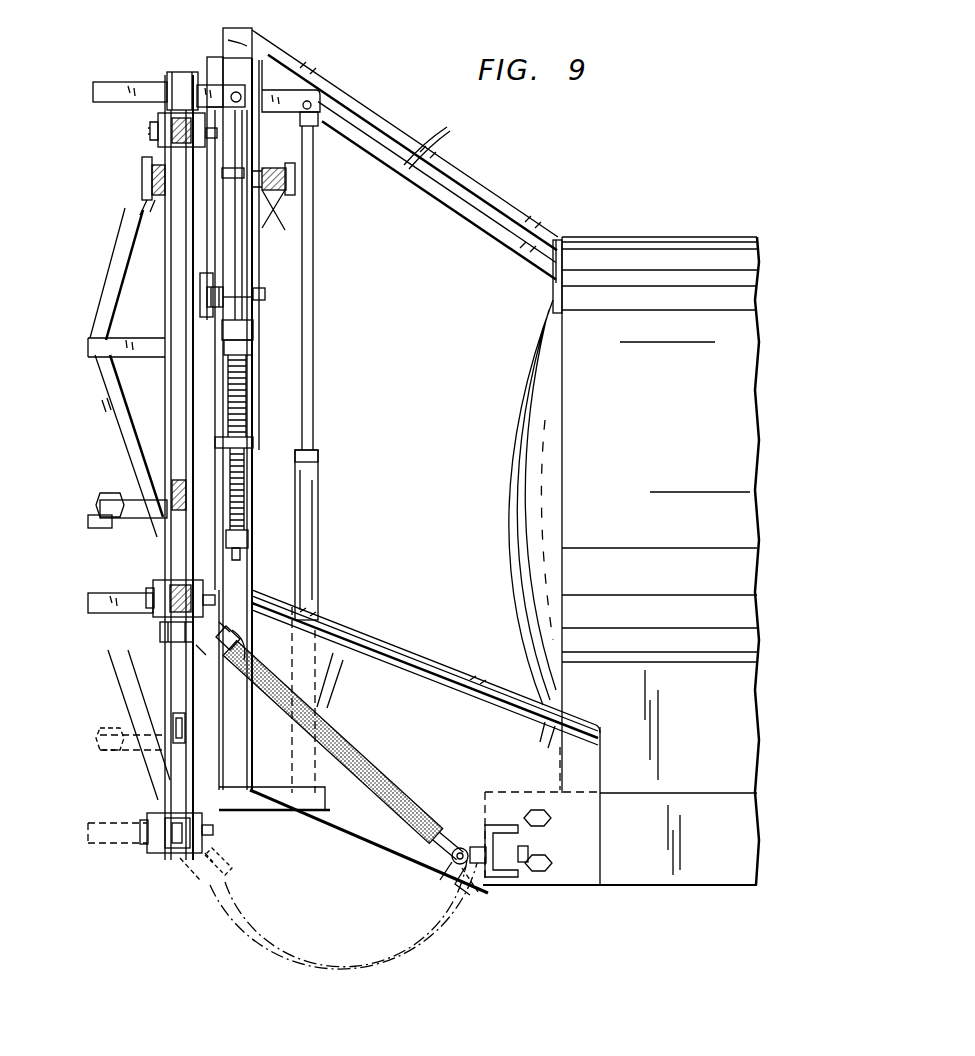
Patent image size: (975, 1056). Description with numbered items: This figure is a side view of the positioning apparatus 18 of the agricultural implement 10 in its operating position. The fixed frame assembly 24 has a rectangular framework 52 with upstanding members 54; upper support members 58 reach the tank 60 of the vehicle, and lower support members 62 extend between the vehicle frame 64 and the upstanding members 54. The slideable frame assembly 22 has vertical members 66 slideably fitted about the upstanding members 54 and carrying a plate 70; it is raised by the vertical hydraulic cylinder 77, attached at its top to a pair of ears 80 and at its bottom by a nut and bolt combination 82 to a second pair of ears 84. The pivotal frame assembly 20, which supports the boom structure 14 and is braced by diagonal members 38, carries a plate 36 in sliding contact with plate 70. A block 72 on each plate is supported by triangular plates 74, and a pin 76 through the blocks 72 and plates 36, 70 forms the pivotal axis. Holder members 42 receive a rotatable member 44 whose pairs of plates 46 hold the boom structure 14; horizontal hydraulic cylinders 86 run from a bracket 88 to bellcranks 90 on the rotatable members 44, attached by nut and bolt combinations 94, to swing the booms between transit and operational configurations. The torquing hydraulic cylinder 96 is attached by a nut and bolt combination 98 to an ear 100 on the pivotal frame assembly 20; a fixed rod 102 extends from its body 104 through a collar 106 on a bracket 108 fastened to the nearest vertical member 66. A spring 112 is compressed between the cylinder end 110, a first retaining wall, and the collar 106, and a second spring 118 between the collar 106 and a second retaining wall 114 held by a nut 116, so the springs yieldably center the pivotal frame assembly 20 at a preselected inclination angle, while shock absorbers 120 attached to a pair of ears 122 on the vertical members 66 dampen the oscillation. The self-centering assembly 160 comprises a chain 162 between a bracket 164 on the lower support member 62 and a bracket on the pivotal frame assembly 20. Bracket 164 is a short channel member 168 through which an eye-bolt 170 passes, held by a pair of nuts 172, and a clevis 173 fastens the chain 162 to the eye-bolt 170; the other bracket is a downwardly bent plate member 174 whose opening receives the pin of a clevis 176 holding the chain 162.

The agricultural implement 10 is at (542, 138).
The boom structure 14 is at (163, 480).
The positioning apparatus 18 is at (350, 72).
The pivotal frame assembly 20 is at (106, 268).
The slideable frame assembly 22 is at (274, 66).
The fixed frame assembly 24 is at (222, 34).
The plate 36 is at (200, 254).
The diagonal members 38 is at (118, 85).
The holder members 42 is at (170, 82).
The rotatable member 44 is at (166, 382).
The plates 46 is at (162, 118).
The rectangular framework 52 is at (232, 585).
The upstanding members 54 is at (240, 745).
The upper support members 58 is at (430, 142).
The tank 60 is at (662, 250).
The lower support members 62 is at (448, 700).
The frame 64 is at (656, 880).
The vertical members 66 is at (266, 60).
The plate 70 is at (221, 275).
The block 72 is at (152, 178).
The triangular plates 74 is at (143, 200).
The pin 76 is at (150, 165).
The hydraulic cylinder 77 is at (320, 500).
The pair of ears 80 is at (306, 103).
The nut and bolt combination 82 is at (311, 818).
The second pair of ears 84 is at (260, 812).
The horizontal hydraulic cylinders 86 is at (94, 503).
The bracket 88 is at (123, 540).
The bellcranks 90 is at (147, 500).
The nut and bolt combinations 94 is at (118, 522).
The torquing hydraulic cylinder 96 is at (241, 260).
The nut and bolt combination 98 is at (235, 92).
The ear 100 is at (224, 92).
The fixed rod 102 is at (239, 572).
The body 104 is at (254, 330).
The collar 106 is at (254, 440).
The bracket 108 is at (243, 382).
The end 110 is at (253, 350).
The spring 112 is at (249, 402).
The second retaining wall 114 is at (246, 532).
The nut 116 is at (243, 552).
The second spring 118 is at (246, 503).
The shock absorbers 120 is at (252, 133).
The pair of ears 122 is at (246, 287).
The assembly 160 is at (388, 735).
The chain 162 is at (445, 845).
The bracket 164 is at (506, 888).
The channel member 168 is at (498, 825).
The eye-bolt 170 is at (452, 862).
The nuts 172 is at (520, 856).
The clevis 173 is at (452, 855).
The plate member 174 is at (200, 646).
The clevis 176 is at (228, 640).